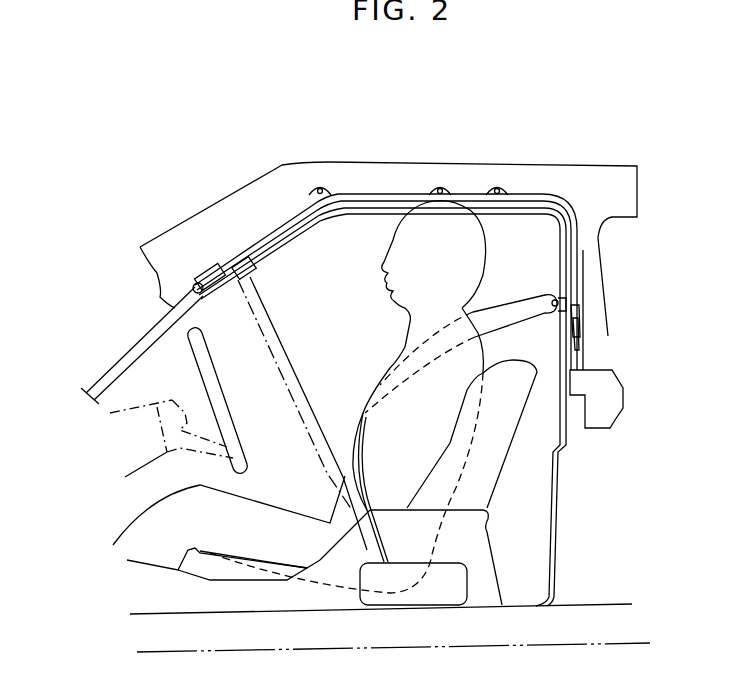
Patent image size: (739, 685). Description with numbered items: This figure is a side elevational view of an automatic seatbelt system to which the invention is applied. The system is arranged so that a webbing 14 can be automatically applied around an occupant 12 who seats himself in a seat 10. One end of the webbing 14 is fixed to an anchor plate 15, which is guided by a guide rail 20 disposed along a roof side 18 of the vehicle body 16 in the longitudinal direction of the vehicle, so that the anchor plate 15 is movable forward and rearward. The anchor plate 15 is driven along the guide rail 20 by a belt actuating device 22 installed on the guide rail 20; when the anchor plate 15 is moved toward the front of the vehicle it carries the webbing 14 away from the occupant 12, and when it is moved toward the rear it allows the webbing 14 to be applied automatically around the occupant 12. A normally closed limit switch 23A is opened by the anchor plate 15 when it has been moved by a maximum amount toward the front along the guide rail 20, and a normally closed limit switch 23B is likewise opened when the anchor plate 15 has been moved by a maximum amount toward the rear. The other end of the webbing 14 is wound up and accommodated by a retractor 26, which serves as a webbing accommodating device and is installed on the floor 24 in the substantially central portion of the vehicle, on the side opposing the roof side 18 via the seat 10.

The seat 10 is at (497, 443).
The occupant 12 is at (477, 257).
The webbing 14 is at (278, 333).
The anchor plate 15 is at (547, 290).
The vehicle body 16 is at (618, 520).
The roof side 18 is at (480, 166).
The guide rail 20 is at (533, 195).
The belt actuating device 22 is at (613, 398).
The limit switch 23A is at (195, 283).
The limit switch 23B is at (583, 350).
The floor 24 is at (560, 603).
The retractor 26 is at (455, 575).